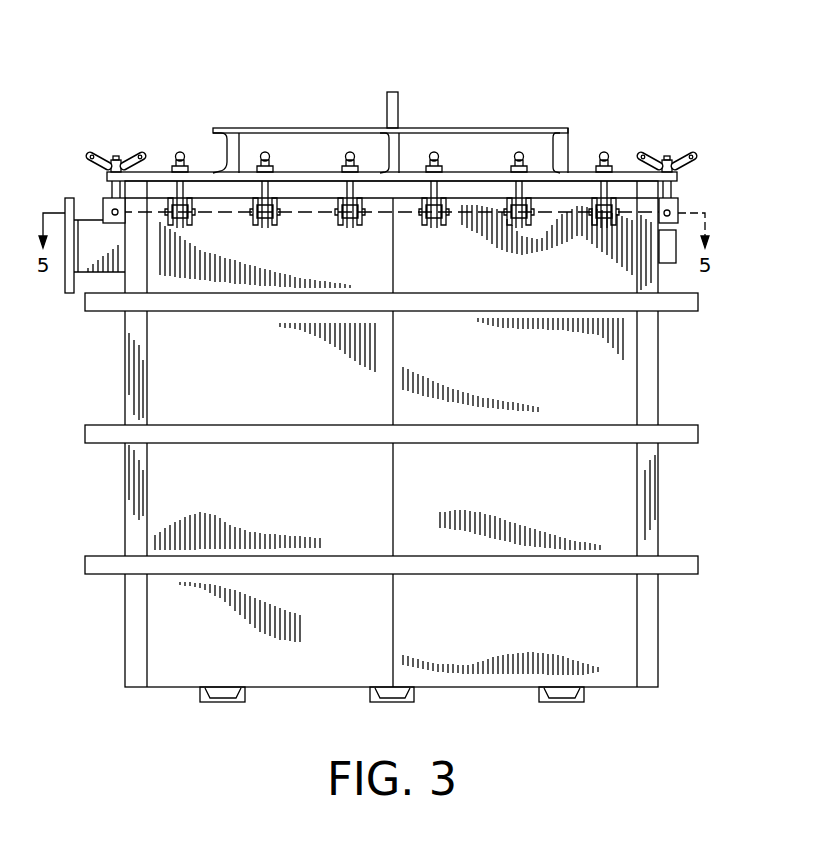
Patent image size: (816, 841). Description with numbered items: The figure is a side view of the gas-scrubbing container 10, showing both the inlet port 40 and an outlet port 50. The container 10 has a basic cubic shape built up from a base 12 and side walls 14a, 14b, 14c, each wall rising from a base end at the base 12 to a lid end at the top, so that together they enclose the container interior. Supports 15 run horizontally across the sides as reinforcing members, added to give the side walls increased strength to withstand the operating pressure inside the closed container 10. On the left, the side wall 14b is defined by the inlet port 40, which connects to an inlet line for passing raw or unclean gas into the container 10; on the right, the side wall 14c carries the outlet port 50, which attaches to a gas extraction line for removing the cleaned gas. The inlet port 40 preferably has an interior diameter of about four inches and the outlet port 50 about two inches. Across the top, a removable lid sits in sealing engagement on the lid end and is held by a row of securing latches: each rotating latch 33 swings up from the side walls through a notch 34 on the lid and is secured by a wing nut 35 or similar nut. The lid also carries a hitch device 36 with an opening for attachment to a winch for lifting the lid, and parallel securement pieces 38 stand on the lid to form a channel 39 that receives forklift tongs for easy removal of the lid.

The container 10 is at (117, 83).
The base 12 is at (610, 690).
The side wall 14a is at (125, 512).
The side wall 14b is at (183, 626).
The side wall 14c is at (660, 530).
The supports 15 is at (698, 430).
The rotating latch 33 is at (600, 190).
The notch 34 is at (255, 170).
The wing nut 35 is at (675, 160).
The hitch device 36 is at (391, 92).
The securement pieces 38 is at (325, 128).
The channel 39 is at (487, 153).
The inlet port 40 is at (65, 205).
The outlet port 50 is at (675, 250).